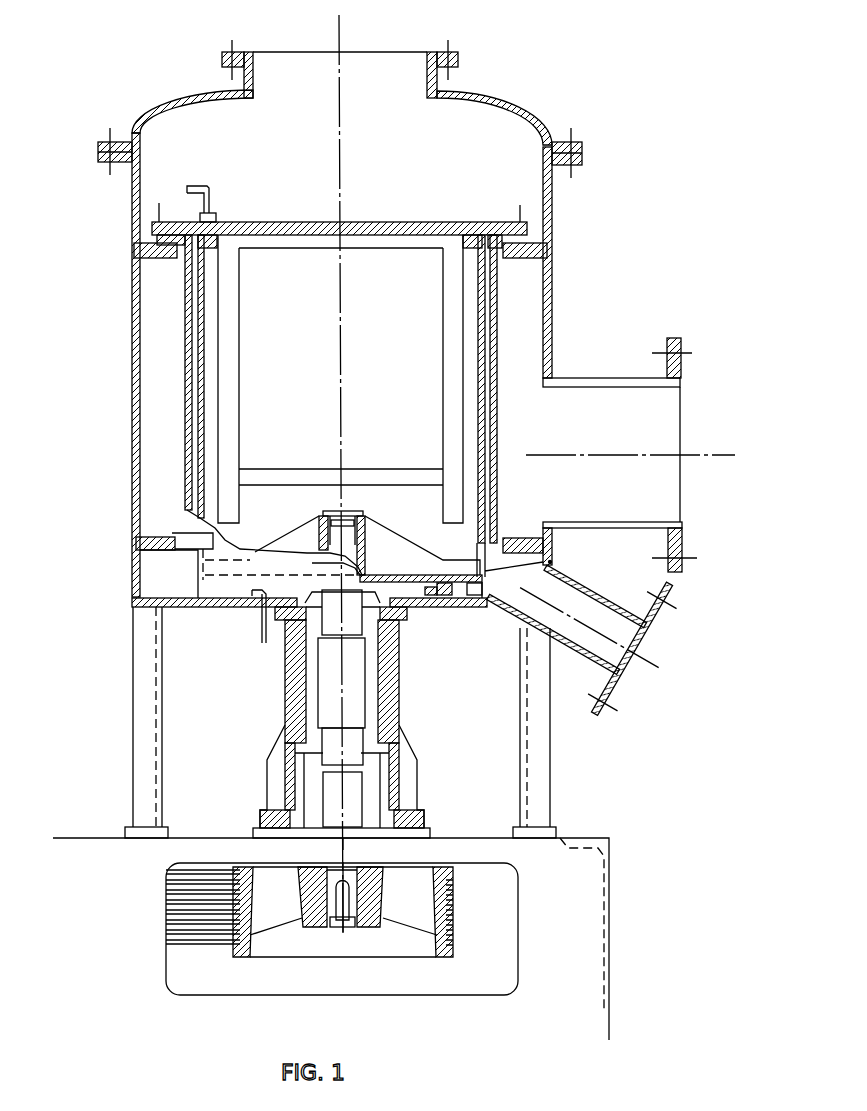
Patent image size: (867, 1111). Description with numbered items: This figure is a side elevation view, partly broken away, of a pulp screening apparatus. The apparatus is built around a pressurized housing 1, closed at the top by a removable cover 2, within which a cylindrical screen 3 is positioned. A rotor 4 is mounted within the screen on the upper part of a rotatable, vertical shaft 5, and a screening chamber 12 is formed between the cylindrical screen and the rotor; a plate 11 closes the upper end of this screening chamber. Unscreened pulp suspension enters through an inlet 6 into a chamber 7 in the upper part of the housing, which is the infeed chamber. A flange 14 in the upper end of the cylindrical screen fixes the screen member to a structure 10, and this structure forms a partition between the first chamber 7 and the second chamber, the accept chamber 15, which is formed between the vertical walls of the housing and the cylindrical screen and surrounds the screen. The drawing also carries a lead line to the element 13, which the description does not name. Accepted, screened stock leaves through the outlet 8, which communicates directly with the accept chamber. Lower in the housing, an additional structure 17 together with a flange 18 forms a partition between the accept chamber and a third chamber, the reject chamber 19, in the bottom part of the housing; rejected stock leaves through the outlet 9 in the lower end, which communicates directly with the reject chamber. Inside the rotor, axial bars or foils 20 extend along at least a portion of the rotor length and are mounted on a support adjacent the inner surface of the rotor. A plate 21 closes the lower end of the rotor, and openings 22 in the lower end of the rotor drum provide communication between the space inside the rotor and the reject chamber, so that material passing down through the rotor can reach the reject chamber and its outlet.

The pressurized housing 1 is at (132, 285).
The removable cover 2 is at (482, 93).
The cylindrical screen 3 is at (188, 323).
The rotor 4 is at (198, 348).
The vertical shaft 5 is at (332, 668).
The inlet 6 is at (371, 52).
The chamber 7 is at (177, 133).
The outlet 8 is at (596, 412).
The outlet 9 is at (623, 635).
The structure 10 is at (138, 247).
The plate 11 is at (497, 222).
The screening chamber 12 is at (495, 303).
The cover plate 13 is at (430, 222).
The flange 14 is at (170, 238).
The accept chamber 15 is at (522, 323).
The additional structure 17 is at (160, 543).
The flange 18 is at (212, 542).
The reject chamber 19 is at (172, 579).
The axial bars or foils 20 is at (230, 293).
The plate 21 is at (437, 605).
The openings 22 is at (551, 562).